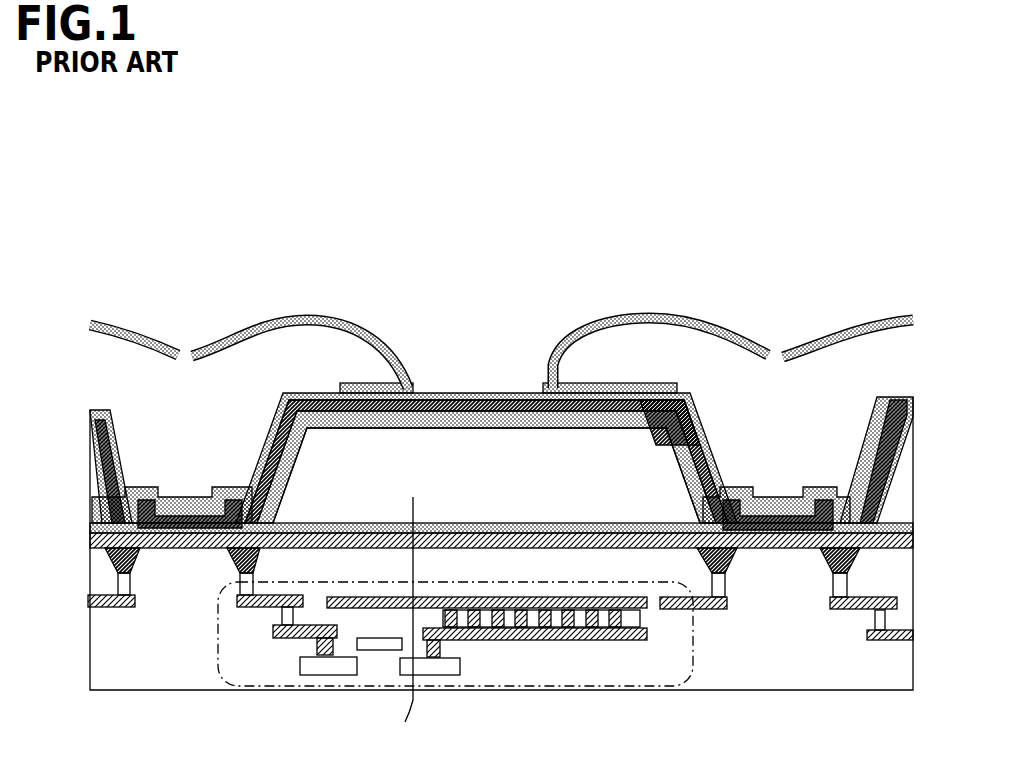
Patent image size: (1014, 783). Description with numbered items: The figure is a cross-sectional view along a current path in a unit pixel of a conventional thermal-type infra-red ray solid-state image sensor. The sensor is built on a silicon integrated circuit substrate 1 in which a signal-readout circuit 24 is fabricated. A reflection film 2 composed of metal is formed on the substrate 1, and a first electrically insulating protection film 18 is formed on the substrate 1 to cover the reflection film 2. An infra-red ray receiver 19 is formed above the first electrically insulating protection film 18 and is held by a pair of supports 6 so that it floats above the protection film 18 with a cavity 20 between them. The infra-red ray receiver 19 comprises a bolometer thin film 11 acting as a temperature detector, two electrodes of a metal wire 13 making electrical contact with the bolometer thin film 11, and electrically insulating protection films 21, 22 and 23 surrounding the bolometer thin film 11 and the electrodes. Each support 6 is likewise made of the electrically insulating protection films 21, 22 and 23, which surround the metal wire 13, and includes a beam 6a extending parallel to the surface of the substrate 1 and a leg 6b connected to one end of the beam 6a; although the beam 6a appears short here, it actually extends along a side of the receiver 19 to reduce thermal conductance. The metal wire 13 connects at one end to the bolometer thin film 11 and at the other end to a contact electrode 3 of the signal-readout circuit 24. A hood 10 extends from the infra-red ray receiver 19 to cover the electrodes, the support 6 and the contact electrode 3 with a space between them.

The silicon integrated circuit substrate 1 is at (782, 684).
The reflection film 2 is at (570, 531).
The contact electrode 3 is at (755, 497).
The support 6 is at (668, 400).
The beam 6a is at (667, 392).
The leg 6b is at (693, 433).
The hood 10 is at (312, 318).
The bolometer thin film 11 is at (450, 392).
The metal wire 13 is at (288, 421).
The first electrically insulating protection film 18 is at (500, 525).
The infra-red ray receiver 19 is at (499, 412).
The cavity 20 is at (401, 627).
The electrically insulating protection film 21 is at (272, 473).
The electrically insulating protection film 22 is at (281, 450).
The electrically insulating protection film 23 is at (292, 400).
The signal-readout circuit 24 is at (604, 688).